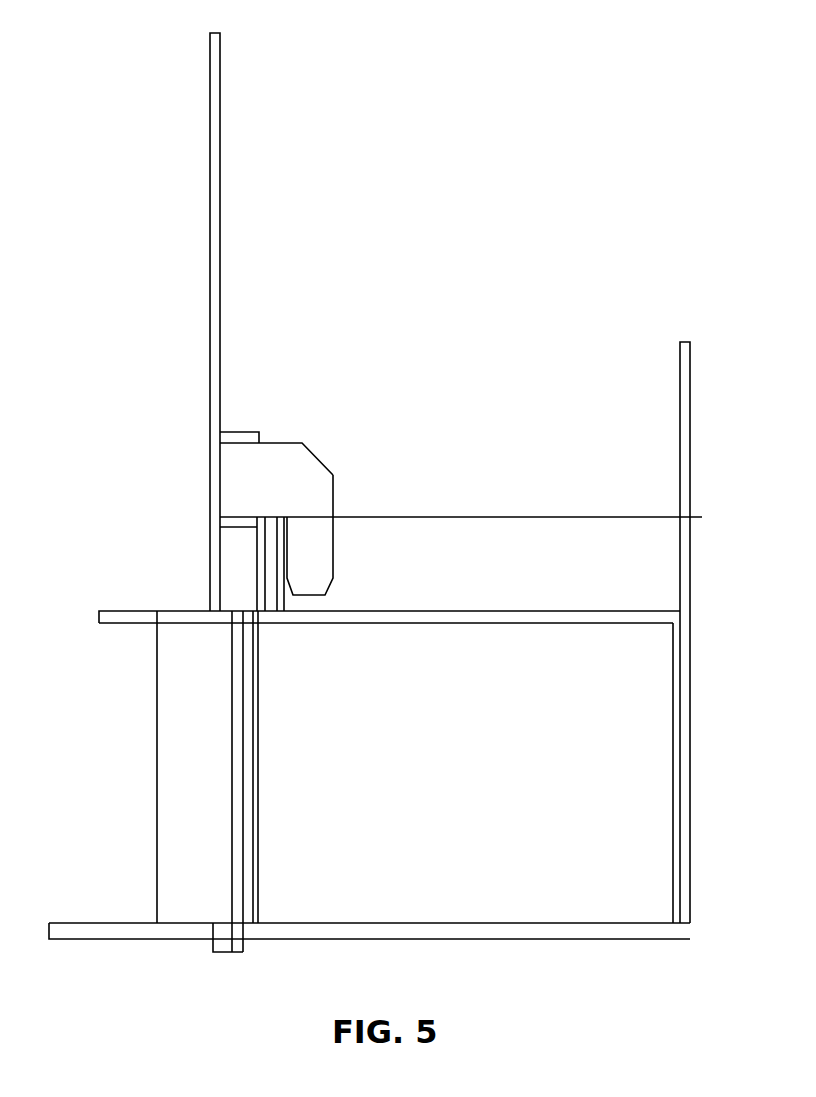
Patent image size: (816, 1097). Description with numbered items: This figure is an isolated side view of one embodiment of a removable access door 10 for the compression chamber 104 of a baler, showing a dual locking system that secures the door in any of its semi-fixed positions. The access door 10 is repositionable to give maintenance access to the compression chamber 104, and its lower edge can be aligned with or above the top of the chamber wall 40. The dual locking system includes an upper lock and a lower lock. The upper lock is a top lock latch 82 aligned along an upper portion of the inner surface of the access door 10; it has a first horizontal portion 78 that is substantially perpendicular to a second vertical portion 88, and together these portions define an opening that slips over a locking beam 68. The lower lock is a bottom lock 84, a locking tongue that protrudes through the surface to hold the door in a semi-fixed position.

The access door 10 is at (210, 145).
The chamber wall 40 is at (172, 755).
The locking beam 68 is at (528, 535).
The first horizontal portion 78 is at (281, 447).
The top lock latch 82 is at (313, 485).
The bottom lock 84 is at (215, 945).
The second vertical portion 88 is at (325, 550).
The compression chamber 104 is at (643, 795).